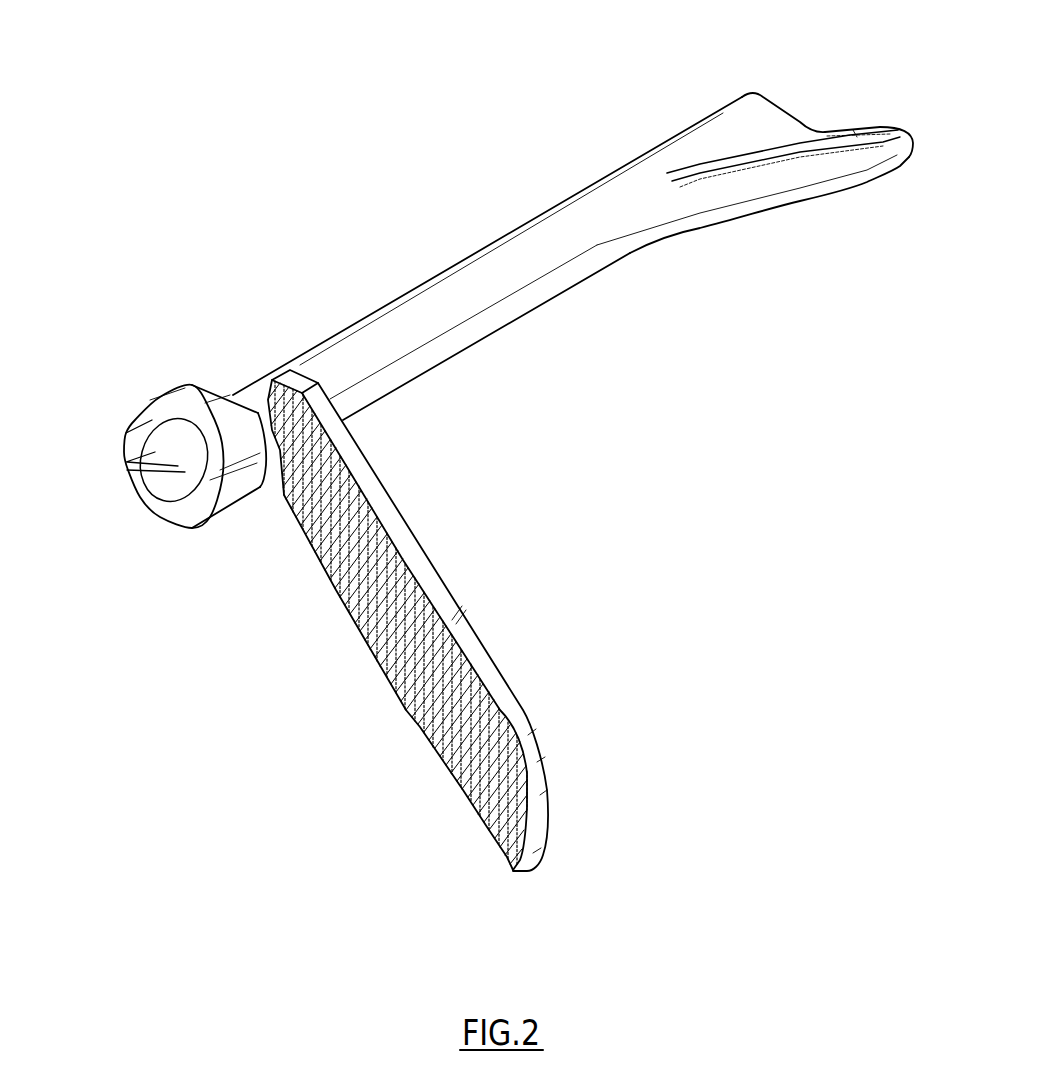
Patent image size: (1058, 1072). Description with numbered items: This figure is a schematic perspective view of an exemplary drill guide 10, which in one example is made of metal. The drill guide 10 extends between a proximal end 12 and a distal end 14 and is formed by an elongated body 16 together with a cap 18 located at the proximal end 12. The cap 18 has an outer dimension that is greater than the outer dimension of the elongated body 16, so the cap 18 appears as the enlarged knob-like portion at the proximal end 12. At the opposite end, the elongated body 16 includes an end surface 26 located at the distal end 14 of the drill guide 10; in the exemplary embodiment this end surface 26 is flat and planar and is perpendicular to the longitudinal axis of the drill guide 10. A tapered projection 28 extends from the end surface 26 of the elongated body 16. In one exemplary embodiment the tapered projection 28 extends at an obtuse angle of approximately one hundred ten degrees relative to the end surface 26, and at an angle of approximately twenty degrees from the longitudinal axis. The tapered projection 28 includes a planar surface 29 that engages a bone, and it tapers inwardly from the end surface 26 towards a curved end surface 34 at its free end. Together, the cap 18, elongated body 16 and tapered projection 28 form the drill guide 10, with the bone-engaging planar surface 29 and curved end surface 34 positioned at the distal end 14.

The drill guide 10 is at (552, 97).
The proximal end 12 is at (95, 427).
The distal end 14 is at (842, 71).
The elongated body 16 is at (342, 340).
The cap 18 is at (183, 417).
The end surface 26 is at (787, 107).
The tapered projection 28 is at (853, 173).
The planar surface 29 is at (855, 125).
The curved end surface 34 is at (917, 153).